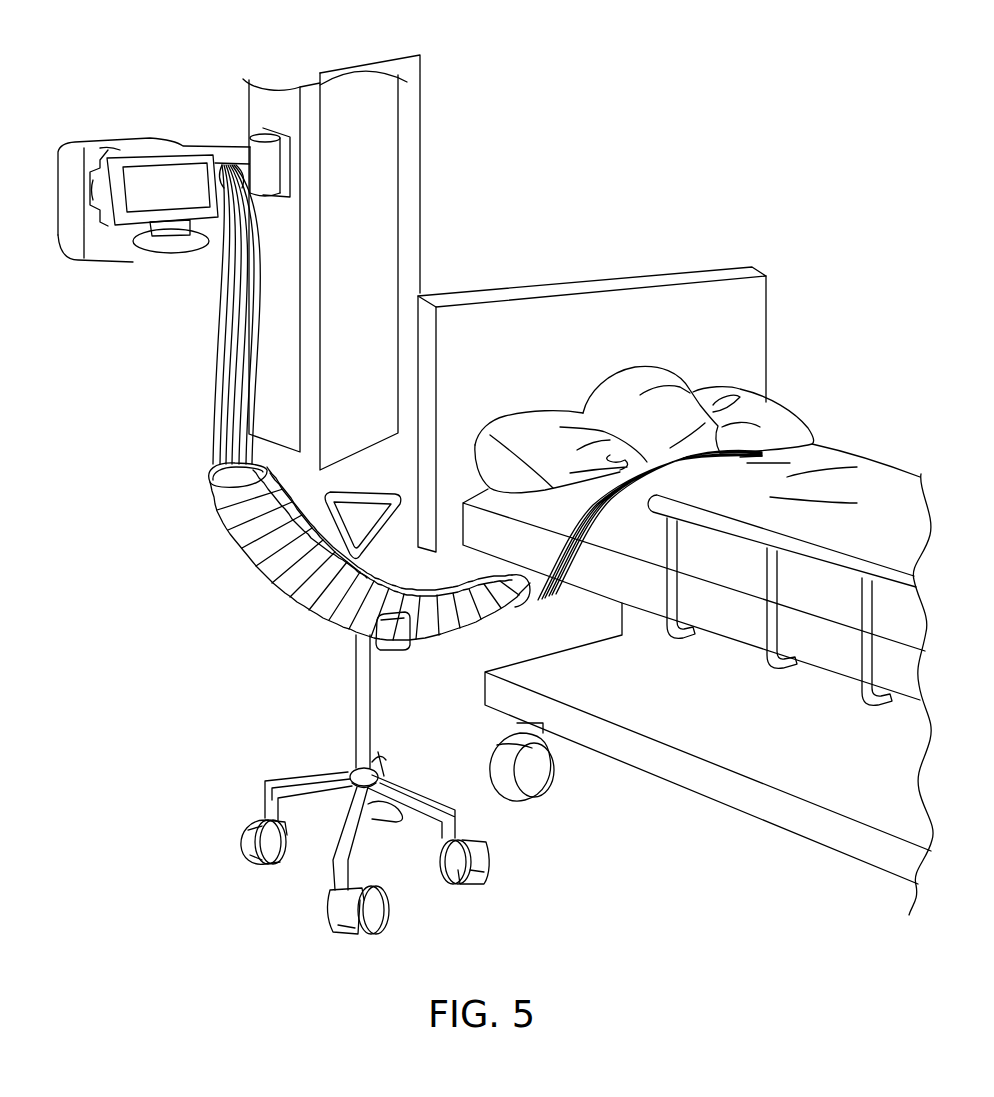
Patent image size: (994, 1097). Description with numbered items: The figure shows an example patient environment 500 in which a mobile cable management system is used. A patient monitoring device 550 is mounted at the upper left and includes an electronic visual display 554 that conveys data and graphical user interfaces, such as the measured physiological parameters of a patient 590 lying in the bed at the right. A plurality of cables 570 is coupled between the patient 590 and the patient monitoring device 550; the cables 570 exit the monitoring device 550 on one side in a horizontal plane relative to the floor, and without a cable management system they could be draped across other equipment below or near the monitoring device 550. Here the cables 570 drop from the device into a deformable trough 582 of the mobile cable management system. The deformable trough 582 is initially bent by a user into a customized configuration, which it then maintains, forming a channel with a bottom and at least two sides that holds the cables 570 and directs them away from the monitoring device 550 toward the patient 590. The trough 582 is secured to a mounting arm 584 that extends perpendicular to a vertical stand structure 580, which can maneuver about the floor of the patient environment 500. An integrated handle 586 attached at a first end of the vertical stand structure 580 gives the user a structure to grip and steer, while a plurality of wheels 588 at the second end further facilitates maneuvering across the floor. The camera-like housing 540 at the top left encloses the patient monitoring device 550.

The patient environment 500 is at (784, 52).
The camera housing 540 is at (90, 260).
The patient monitoring device 550 is at (148, 243).
The electronic visual display 554 is at (207, 201).
The plurality of cables 570 is at (215, 345).
The vertical stand structure 580 is at (357, 672).
The deformable trough 582 is at (300, 600).
The mounting arm 584 is at (393, 648).
The integrated handle 586 is at (330, 493).
The casters 588 is at (267, 863).
The patient 590 is at (640, 360).